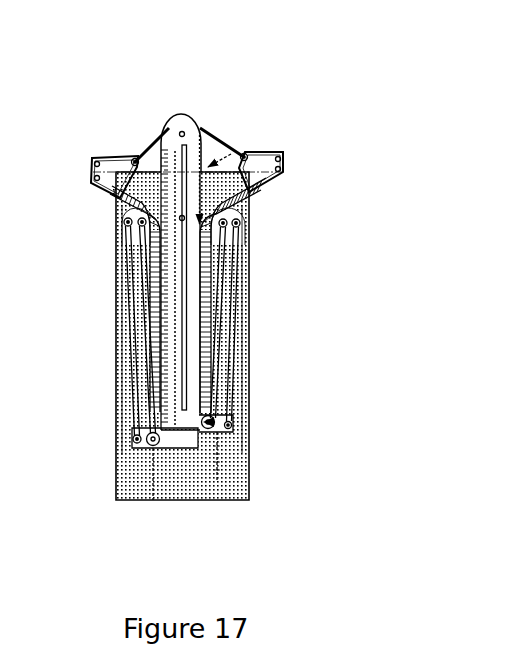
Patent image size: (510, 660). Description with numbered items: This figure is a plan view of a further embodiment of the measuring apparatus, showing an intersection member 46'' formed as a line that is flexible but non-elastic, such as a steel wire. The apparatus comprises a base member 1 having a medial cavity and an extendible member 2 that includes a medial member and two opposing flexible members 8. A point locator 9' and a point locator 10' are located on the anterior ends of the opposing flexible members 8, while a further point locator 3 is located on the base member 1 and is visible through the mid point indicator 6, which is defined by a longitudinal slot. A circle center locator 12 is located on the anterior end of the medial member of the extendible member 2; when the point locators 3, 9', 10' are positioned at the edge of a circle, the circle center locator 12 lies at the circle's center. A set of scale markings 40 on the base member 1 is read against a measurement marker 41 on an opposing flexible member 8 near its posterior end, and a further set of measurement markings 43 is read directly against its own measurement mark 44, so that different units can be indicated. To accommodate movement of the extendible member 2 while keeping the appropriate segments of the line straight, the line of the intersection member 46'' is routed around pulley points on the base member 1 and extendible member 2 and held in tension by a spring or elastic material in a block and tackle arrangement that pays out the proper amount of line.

The base member 1 is at (252, 371).
The extendible member 2 is at (231, 428).
The point locator 3 is at (222, 228).
The mid point indicator 6 is at (172, 298).
The opposing flexible member 8 is at (133, 203).
The point locator 9' is at (304, 156).
The point locator 10' is at (72, 161).
The circle center locator 12 is at (188, 129).
The set of scale markings 40 is at (137, 355).
The measurement marker 41 is at (141, 401).
The set of measurement markings 43 is at (223, 400).
The measurement mark 44 is at (171, 252).
The intersection member 46'' is at (134, 130).